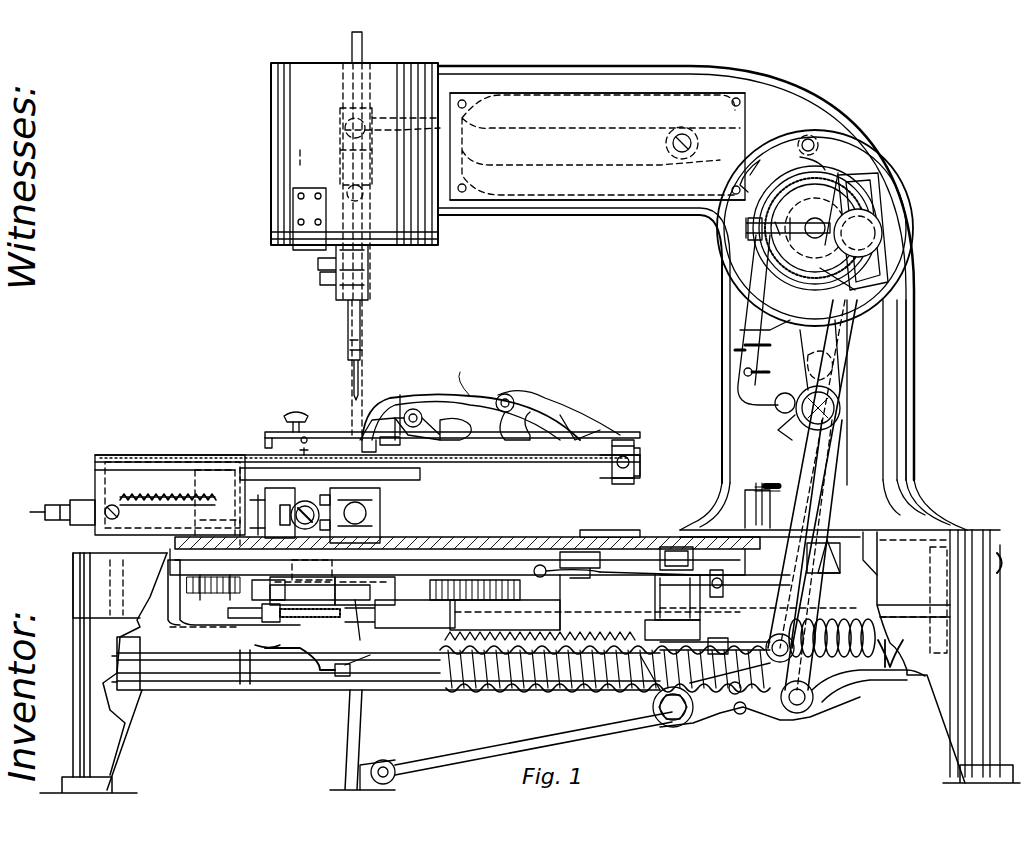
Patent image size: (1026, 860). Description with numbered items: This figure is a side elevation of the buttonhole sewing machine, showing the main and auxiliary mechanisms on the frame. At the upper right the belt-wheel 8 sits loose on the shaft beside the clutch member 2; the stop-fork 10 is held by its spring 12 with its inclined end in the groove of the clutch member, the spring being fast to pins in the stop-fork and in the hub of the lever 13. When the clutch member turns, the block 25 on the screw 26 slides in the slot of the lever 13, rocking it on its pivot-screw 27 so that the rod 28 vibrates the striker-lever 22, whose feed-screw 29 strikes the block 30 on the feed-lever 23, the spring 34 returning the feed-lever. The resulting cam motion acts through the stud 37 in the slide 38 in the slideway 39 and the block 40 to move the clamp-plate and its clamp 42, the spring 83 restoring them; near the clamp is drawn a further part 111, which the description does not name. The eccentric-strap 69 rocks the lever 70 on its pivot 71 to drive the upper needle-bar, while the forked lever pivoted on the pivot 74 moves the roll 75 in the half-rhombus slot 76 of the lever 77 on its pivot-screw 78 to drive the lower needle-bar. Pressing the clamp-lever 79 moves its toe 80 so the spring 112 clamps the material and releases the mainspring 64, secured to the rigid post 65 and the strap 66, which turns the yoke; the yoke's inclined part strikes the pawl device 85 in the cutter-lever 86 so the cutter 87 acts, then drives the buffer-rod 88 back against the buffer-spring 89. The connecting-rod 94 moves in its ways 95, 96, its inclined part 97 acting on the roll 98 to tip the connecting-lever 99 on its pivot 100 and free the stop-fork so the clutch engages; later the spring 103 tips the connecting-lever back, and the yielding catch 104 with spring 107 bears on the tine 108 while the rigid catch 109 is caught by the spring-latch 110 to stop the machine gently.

The clutch member 2 is at (808, 225).
The belt-wheel 8 is at (878, 250).
The stop-fork 10 is at (840, 565).
The spring 12 is at (768, 485).
The lever 13 is at (876, 187).
The striker-lever 22 is at (302, 591).
The feed-lever 23 is at (372, 612).
The block 25 is at (860, 280).
The screw 26 is at (870, 228).
The pivot-screw 27 is at (795, 418).
The rod 28 is at (320, 680).
The feed-screw 29 is at (269, 612).
The block 30 is at (375, 608).
The spring 34 is at (540, 629).
The stud 37 is at (272, 507).
The slide 38 is at (45, 512).
The slideway 39 is at (131, 522).
The block 40 is at (215, 502).
The clamp 42 is at (397, 395).
The mainspring 64 is at (508, 690).
The rigid post 65 is at (915, 596).
The strap 66 is at (196, 690).
The eccentric-strap 69 is at (774, 110).
The lever 70 is at (597, 146).
The pivot 71 is at (666, 140).
The pivot 74 is at (835, 360).
The roll 75 is at (800, 715).
The slot 76 is at (818, 695).
The lever 77 is at (447, 765).
The pivot-screw 78 is at (675, 730).
The clamp-lever 79 is at (277, 430).
The toe 80 is at (420, 440).
The spring 83 is at (170, 495).
The pawl device 85 is at (634, 477).
The cutter-lever 86 is at (466, 395).
The cutter 87 is at (362, 440).
The buffer-rod 88 is at (380, 514).
The buffer-spring 89 is at (295, 512).
The connecting-rod 94 is at (492, 563).
The way 95 is at (500, 537).
The way 96 is at (630, 536).
The inclined part 97 is at (570, 575).
The roll 98 is at (555, 570).
The connecting-lever 99 is at (630, 578).
The pivot 100 is at (728, 600).
The spring 103 is at (576, 561).
The yielding catch 104 is at (745, 236).
The spring 107 is at (815, 228).
The tine 108 is at (760, 300).
The rigid catch 109 is at (742, 227).
The spring-latch 110 is at (738, 330).
The roller 111 is at (430, 408).
The spring 112 is at (506, 395).